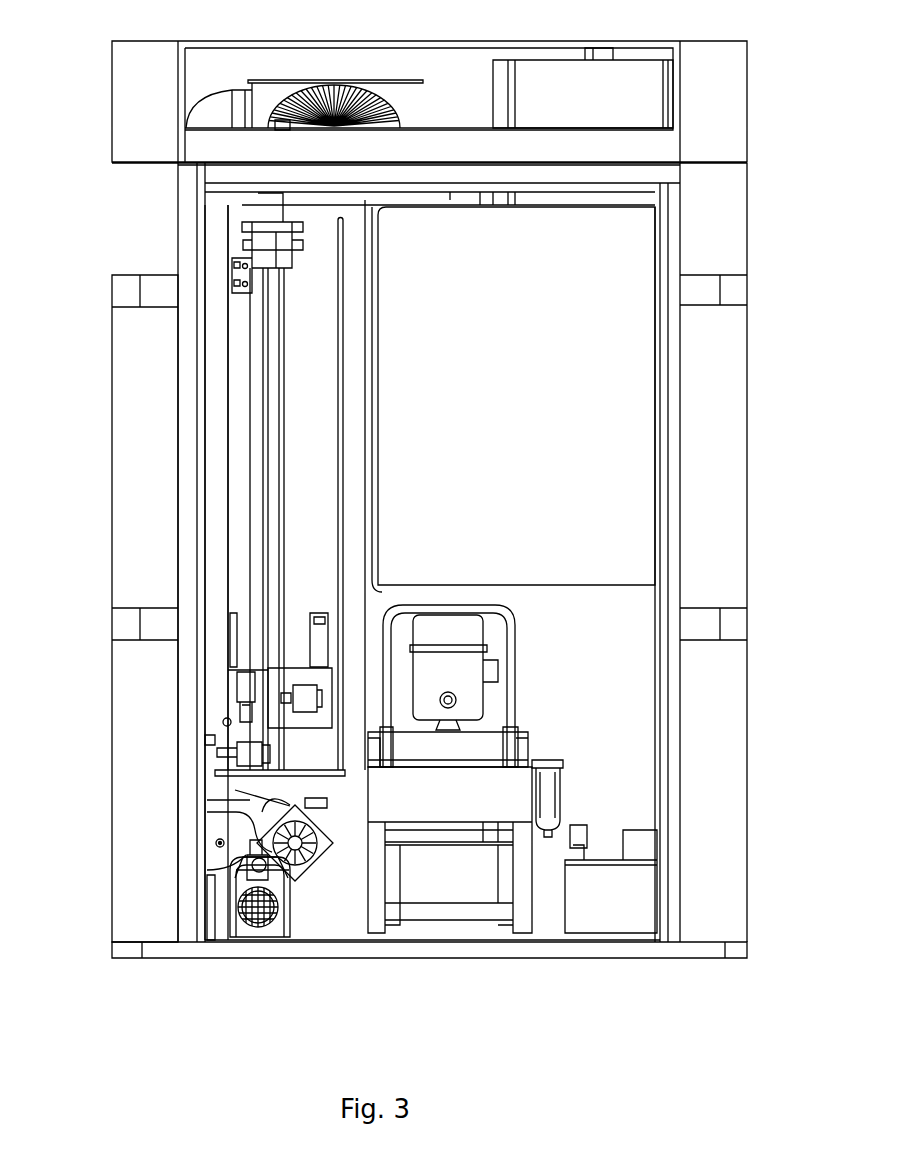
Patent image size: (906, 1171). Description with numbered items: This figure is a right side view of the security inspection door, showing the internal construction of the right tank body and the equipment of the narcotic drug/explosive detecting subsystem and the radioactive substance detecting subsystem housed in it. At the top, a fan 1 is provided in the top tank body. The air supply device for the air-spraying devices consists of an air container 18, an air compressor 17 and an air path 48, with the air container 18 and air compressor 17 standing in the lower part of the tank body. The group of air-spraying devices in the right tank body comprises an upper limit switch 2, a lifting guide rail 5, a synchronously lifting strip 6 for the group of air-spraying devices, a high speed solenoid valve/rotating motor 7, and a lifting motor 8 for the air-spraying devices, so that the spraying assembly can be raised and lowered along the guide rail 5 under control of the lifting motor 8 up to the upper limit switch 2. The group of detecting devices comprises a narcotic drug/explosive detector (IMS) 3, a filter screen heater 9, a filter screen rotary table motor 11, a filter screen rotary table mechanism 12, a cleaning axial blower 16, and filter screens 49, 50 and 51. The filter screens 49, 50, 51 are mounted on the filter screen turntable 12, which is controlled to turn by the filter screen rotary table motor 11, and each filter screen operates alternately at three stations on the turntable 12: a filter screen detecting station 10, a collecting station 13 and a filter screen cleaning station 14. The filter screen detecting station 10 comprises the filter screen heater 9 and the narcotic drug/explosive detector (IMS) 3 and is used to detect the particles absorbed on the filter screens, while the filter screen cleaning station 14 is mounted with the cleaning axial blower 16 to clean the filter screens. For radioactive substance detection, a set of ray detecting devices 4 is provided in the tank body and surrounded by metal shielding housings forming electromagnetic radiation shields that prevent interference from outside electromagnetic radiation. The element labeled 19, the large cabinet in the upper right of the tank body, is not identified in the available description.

The fan 1 is at (300, 103).
The upper limit switch 2 is at (232, 262).
The air path 48 is at (215, 352).
The ray detecting devices 4 is at (150, 420).
The lifting guide rail 5 is at (263, 475).
The synchronously lifting strip 6 is at (283, 692).
The high speed solenoid valve/rotating motor 7 is at (300, 697).
The lifting motor 8 is at (220, 748).
The filter screen heater 9 is at (220, 832).
The filter screen detecting station 10 is at (216, 842).
The filter screen 49 is at (217, 845).
The narcotic drug/explosive detector (IMS) 3 is at (250, 872).
The filter screen rotary table motor 11 is at (235, 878).
The filter screen rotary table mechanism 12 is at (215, 882).
The collecting station 13 is at (245, 933).
The filter screen 50 is at (258, 910).
The filter screen cleaning station 14 is at (290, 852).
The filter screen 51 is at (305, 860).
The cleaning axial blower 16 is at (370, 752).
The air compressor 17 is at (450, 797).
The air container 18 is at (450, 668).
The cabinet 19 is at (535, 408).